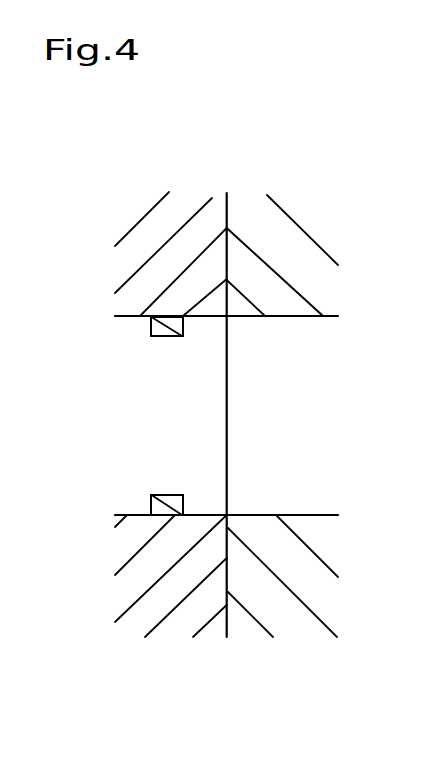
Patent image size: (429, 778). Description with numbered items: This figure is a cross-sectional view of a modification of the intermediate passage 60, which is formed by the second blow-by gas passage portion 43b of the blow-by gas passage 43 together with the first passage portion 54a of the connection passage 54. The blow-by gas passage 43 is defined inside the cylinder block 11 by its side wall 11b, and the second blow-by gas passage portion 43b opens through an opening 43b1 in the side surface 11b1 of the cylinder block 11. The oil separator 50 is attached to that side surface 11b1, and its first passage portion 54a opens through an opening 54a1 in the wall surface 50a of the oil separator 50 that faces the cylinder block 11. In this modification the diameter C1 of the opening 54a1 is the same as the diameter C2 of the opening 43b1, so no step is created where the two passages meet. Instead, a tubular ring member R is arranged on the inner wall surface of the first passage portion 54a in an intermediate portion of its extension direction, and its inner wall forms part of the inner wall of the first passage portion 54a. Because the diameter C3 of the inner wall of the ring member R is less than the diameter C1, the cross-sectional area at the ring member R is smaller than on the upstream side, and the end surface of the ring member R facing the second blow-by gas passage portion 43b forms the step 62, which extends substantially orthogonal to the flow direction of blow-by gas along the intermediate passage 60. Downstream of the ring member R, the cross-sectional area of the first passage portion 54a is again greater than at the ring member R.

The wall surface 50a is at (227, 197).
The oil separator 50 is at (123, 227).
The side surface 11b1 is at (226, 228).
The side wall 11b is at (295, 208).
The cylinder block 11 is at (338, 203).
The opening 43b1 is at (223, 314).
The ring member R is at (168, 316).
The opening 54a1 is at (227, 515).
The step 62 is at (185, 508).
The diameter C1 is at (122, 316).
The diameter C2 is at (320, 316).
The diameter C3 is at (167, 336).
The first passage portion 54a is at (128, 515).
The connection passage 54 is at (179, 694).
The second blow-by gas passage portion 43b is at (285, 515).
The blow-by gas passage 43 is at (253, 694).
The intermediate passage 60 is at (282, 707).